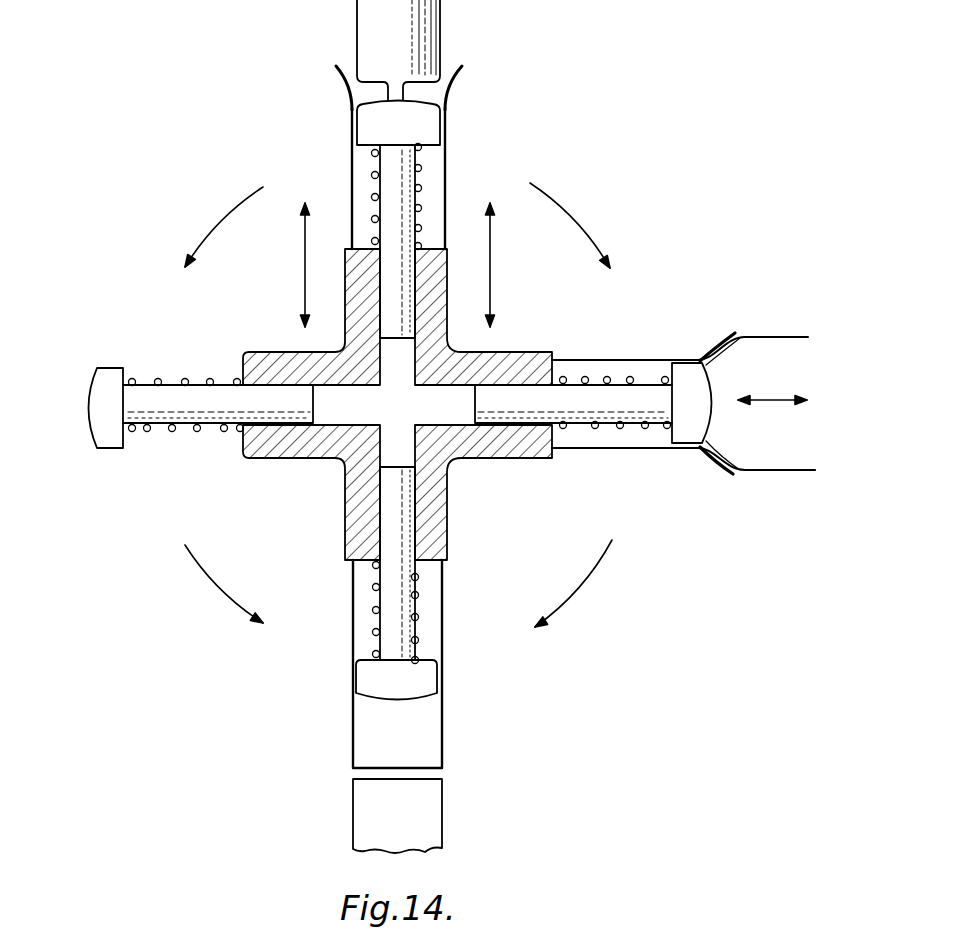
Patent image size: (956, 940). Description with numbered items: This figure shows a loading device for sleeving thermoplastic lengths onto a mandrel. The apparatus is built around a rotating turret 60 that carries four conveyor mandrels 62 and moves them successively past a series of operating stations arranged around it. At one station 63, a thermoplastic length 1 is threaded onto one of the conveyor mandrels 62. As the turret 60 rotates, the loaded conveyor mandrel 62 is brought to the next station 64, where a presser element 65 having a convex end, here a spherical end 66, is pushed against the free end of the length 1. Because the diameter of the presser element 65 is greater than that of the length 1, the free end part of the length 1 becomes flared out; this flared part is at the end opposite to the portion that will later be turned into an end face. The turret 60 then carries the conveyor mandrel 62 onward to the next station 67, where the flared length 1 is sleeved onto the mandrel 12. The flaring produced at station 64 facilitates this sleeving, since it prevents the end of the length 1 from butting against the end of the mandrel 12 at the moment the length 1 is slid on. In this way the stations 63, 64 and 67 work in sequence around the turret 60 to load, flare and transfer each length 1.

The length 1 is at (448, 120).
The mandrel 12 is at (410, 35).
The rotating turret 60 is at (304, 447).
The conveyor mandrel 62 is at (398, 563).
The station 63 is at (342, 629).
The station 64 is at (655, 350).
The presser element 65 is at (772, 454).
The spherical end 66 is at (722, 455).
The station 67 is at (458, 175).